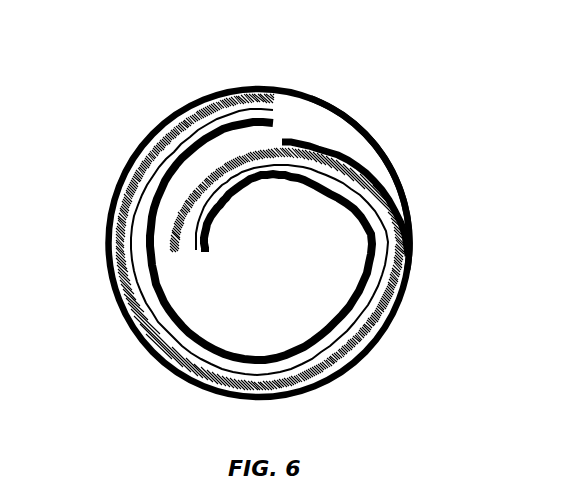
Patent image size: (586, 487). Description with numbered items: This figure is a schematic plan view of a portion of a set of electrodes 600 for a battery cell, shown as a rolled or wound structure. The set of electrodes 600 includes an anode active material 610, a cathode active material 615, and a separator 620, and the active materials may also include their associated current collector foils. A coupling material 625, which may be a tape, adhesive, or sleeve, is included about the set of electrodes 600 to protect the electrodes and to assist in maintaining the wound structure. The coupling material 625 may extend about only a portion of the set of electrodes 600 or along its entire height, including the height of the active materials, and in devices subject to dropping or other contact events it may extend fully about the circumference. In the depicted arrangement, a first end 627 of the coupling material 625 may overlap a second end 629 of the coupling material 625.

The set of electrodes 600 is at (116, 80).
The anode active material 610 is at (119, 190).
The cathode active material 615 is at (150, 281).
The separator 620 is at (117, 240).
The coupling material 625 is at (411, 262).
The first end of coupling material 627 is at (390, 159).
The second end of coupling material 629 is at (336, 151).